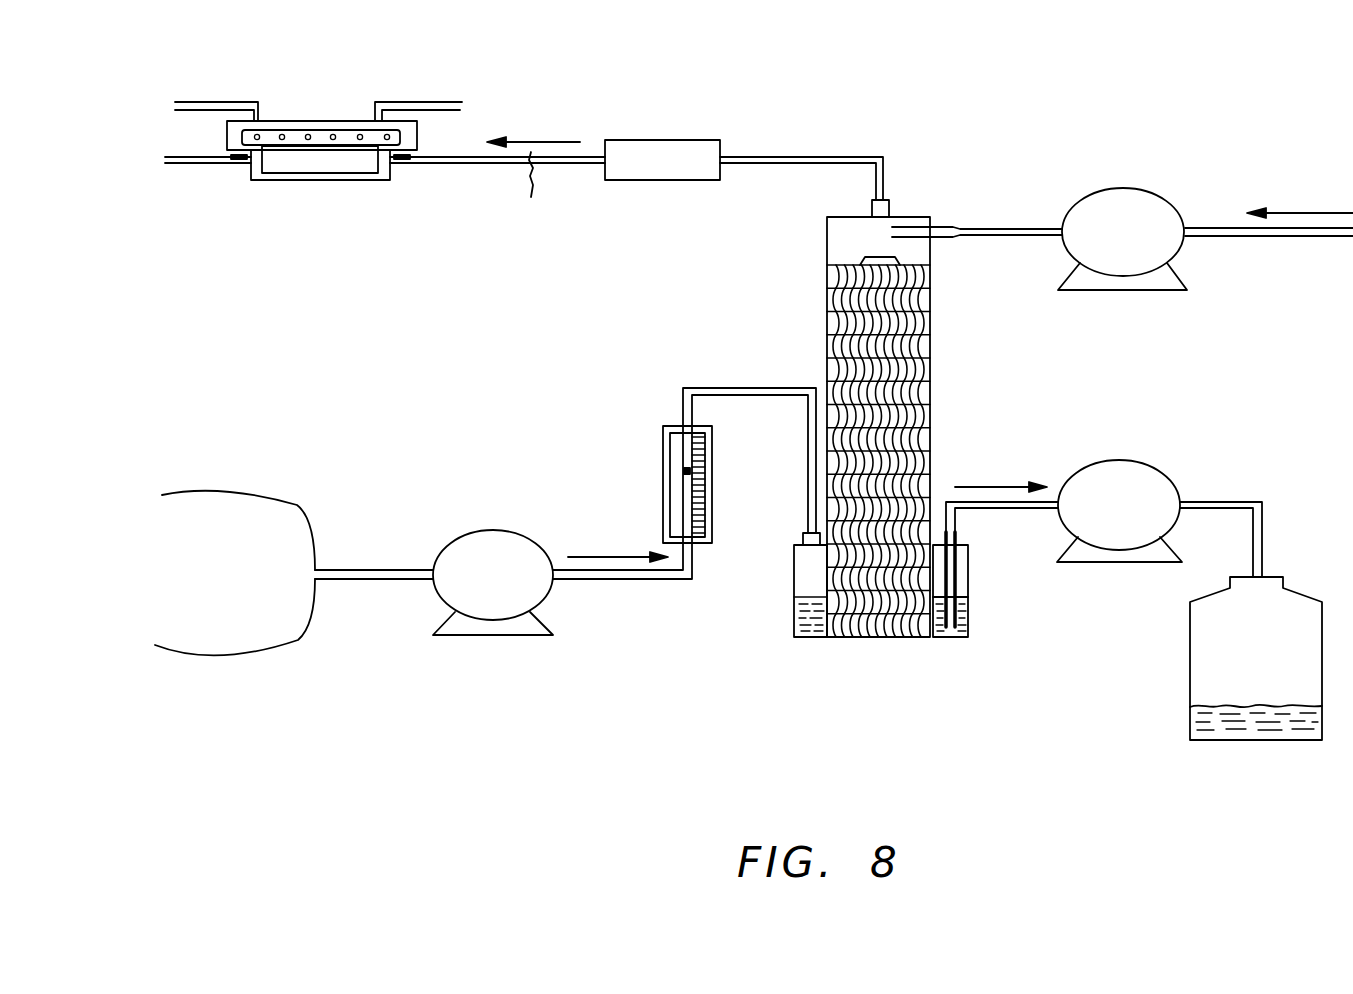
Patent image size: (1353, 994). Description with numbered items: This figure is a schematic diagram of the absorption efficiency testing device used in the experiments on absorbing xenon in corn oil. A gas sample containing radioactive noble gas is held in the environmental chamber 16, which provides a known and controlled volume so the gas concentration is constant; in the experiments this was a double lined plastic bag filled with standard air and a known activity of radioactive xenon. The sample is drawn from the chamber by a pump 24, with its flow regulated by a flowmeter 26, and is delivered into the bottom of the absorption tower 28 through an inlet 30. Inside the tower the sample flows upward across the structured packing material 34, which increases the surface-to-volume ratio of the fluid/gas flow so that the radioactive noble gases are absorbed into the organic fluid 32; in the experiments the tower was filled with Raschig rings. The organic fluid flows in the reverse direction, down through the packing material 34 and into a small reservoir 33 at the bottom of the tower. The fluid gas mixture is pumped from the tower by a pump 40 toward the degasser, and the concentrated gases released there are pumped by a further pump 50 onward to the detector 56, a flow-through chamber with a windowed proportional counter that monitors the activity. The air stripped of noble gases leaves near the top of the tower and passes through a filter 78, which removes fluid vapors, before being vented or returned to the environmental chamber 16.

The environmental chamber 16 is at (228, 656).
The pump 24 is at (462, 635).
The flowmeter 26 is at (663, 462).
The absorption tower 28 is at (825, 348).
The inlet 30 is at (800, 540).
The organic fluid 32 is at (808, 637).
The small reservoir 33 is at (805, 575).
The structured packing material 34 is at (887, 338).
The pump 40 is at (1115, 562).
The pump 50 is at (1127, 188).
The detector 56 is at (293, 180).
The filter 78 is at (623, 180).